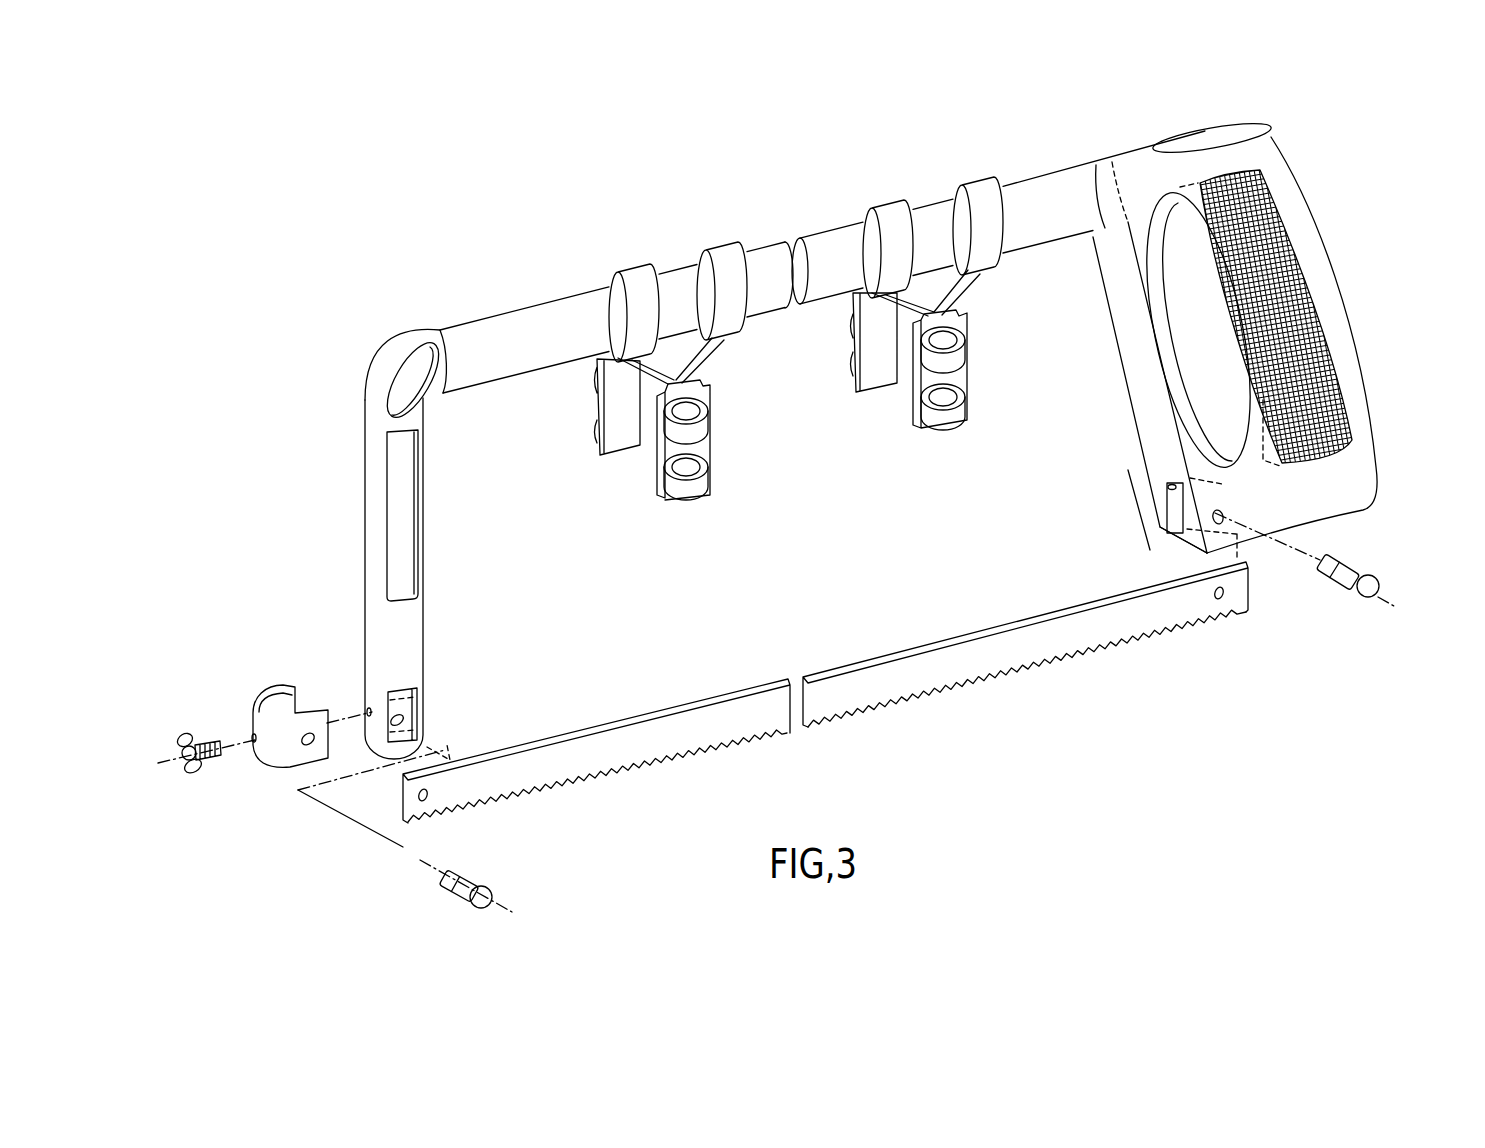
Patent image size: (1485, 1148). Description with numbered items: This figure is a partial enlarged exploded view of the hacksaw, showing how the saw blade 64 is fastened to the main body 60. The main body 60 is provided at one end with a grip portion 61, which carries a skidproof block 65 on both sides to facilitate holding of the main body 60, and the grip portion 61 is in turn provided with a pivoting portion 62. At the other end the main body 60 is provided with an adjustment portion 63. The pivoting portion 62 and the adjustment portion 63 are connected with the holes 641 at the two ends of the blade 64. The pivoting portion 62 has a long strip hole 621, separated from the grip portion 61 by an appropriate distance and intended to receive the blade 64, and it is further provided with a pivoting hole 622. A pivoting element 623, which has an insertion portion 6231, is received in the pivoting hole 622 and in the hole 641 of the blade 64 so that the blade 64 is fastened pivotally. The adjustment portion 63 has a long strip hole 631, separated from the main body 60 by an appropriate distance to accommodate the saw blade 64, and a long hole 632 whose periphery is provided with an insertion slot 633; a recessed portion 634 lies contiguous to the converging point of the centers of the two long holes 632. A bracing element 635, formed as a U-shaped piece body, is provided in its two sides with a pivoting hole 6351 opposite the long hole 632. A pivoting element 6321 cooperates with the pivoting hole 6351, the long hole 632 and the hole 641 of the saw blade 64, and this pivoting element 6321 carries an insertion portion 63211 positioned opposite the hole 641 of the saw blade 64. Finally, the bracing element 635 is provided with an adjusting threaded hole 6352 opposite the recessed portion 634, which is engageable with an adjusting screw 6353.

The main body 60 is at (753, 233).
The grip portion 61 is at (1268, 398).
The skidproof block 65 is at (1273, 197).
The pivoting portion 62 is at (1194, 536).
The long strip hole 621 is at (1180, 540).
The pivoting hole 622 is at (1218, 513).
The pivoting element 623 is at (1387, 603).
The insertion portion 6231 is at (1350, 570).
The adjustment portion 63 is at (389, 645).
The long strip hole 631 is at (427, 717).
The long hole 632 is at (397, 723).
The insertion slot 633 is at (393, 723).
The recessed portion 634 is at (370, 712).
The bracing element 635 is at (265, 695).
The pivoting hole 6351 is at (303, 740).
The adjusting threaded hole 6352 is at (253, 738).
The adjusting screw 6353 is at (210, 733).
The pivoting element 6321 is at (499, 911).
The insertion portion 63211 is at (453, 890).
The blade 64 is at (825, 705).
The hole 641 is at (430, 797).